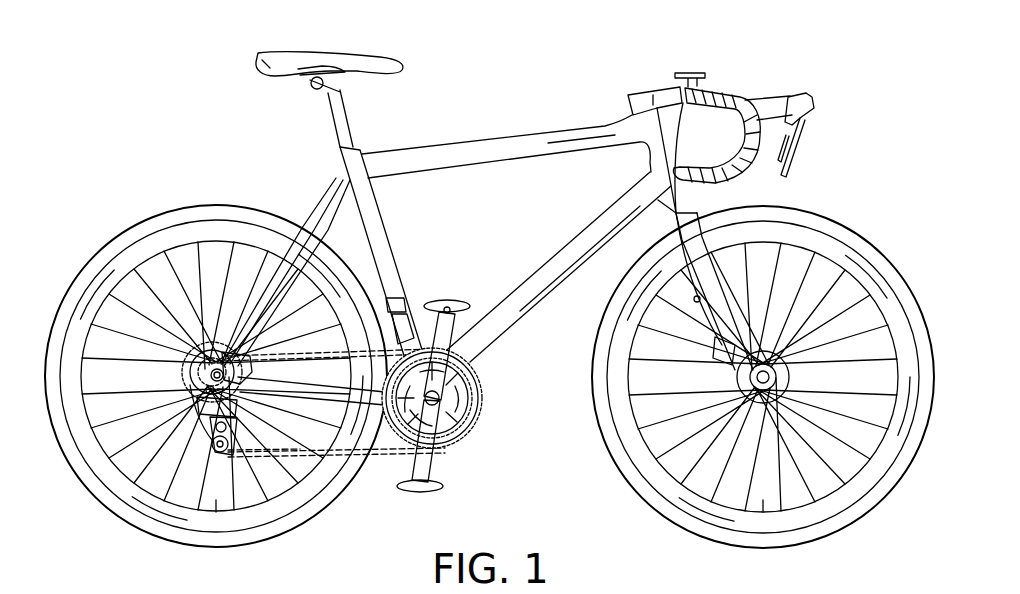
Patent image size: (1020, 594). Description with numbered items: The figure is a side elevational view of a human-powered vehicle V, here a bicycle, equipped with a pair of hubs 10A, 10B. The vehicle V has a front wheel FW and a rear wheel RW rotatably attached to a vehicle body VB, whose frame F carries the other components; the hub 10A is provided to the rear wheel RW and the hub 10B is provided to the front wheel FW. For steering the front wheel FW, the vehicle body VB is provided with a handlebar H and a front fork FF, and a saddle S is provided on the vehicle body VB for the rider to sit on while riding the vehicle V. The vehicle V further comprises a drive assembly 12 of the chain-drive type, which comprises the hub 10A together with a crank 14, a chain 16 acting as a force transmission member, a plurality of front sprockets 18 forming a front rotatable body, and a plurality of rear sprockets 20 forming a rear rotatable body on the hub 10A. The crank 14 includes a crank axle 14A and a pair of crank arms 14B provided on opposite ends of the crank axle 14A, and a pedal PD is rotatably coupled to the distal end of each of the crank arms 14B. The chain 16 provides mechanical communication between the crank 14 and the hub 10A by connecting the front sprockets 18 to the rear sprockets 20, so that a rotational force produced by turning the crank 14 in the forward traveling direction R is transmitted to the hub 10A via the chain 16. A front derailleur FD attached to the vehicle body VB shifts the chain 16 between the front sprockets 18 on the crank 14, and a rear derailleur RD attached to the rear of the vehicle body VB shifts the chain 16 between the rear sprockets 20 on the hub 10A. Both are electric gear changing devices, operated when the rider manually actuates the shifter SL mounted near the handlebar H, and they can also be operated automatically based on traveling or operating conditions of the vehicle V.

The saddle S is at (347, 55).
The human-powered vehicle V is at (791, 42).
The vehicle body VB is at (549, 93).
The handlebar H is at (729, 90).
The shifter SL is at (813, 94).
The frame F is at (479, 140).
The forward traveling direction R is at (258, 191).
The rear wheel RW is at (120, 228).
The front wheel FW is at (866, 228).
The front fork FF is at (740, 285).
The front derailleur FD is at (378, 292).
The rear derailleur RD is at (200, 432).
The pedal PD is at (463, 302).
The rear sprockets 20 is at (177, 303).
The hub 10A is at (175, 377).
The hub 10B is at (781, 378).
The drive assembly 12 is at (371, 486).
The crank 14 is at (482, 379).
The crank axle 14A is at (470, 400).
The crank arms 14B is at (405, 338).
The chain 16 is at (398, 470).
The front sprockets 18 is at (478, 368).